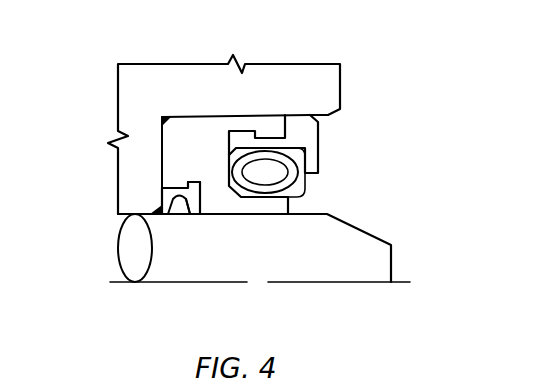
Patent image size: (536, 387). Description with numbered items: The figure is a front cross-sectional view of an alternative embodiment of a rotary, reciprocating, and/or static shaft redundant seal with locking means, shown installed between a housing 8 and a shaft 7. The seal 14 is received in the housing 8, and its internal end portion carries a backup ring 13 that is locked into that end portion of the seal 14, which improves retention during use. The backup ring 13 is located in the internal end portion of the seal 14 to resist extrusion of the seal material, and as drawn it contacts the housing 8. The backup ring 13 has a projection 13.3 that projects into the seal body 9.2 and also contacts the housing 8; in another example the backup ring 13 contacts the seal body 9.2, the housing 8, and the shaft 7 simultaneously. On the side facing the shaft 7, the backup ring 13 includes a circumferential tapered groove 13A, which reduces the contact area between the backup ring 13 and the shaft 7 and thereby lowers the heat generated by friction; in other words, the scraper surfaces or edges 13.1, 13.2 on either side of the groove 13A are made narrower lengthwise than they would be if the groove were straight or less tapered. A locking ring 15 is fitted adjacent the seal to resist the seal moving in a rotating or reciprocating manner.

The shaft 7 is at (345, 240).
The housing 8 is at (302, 82).
The seal body 9.2 is at (173, 135).
The backup ring 13 is at (175, 187).
The scraper surface or edge 13.1 is at (160, 214).
The scraper surface or edge 13.2 is at (193, 214).
The projection 13.3 is at (193, 182).
The circumferential tapered groove 13A is at (178, 214).
The seal 14 is at (158, 197).
The locking ring 15 is at (318, 145).